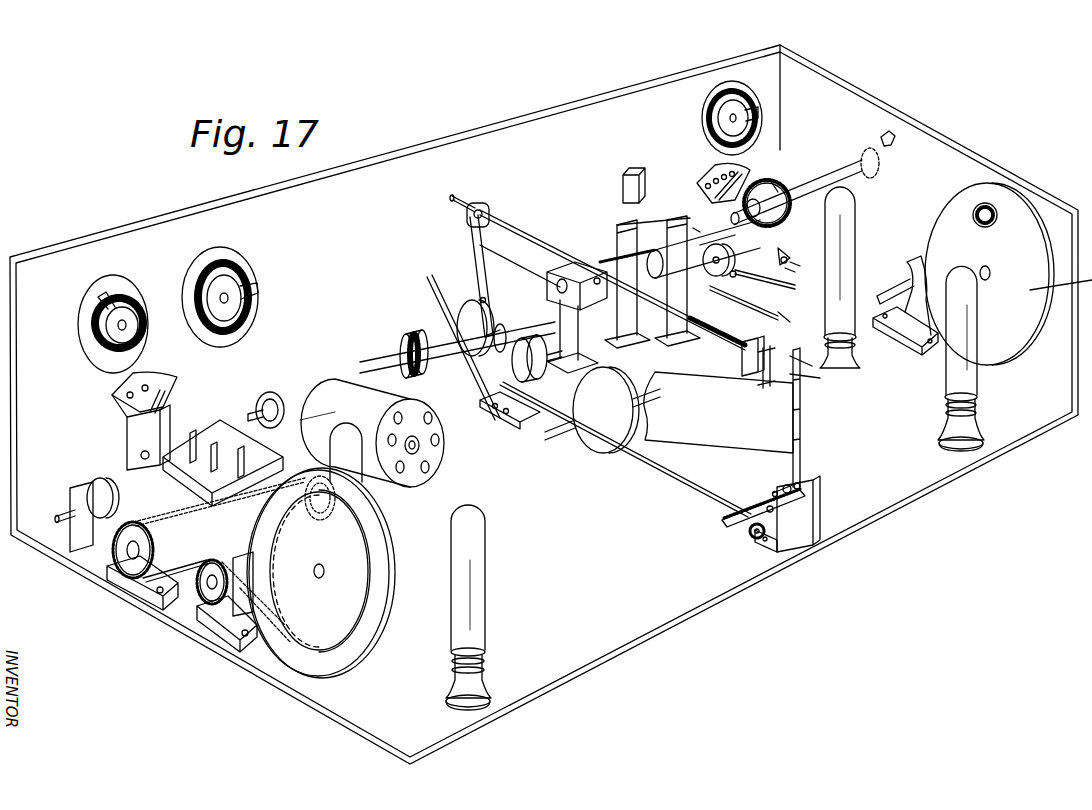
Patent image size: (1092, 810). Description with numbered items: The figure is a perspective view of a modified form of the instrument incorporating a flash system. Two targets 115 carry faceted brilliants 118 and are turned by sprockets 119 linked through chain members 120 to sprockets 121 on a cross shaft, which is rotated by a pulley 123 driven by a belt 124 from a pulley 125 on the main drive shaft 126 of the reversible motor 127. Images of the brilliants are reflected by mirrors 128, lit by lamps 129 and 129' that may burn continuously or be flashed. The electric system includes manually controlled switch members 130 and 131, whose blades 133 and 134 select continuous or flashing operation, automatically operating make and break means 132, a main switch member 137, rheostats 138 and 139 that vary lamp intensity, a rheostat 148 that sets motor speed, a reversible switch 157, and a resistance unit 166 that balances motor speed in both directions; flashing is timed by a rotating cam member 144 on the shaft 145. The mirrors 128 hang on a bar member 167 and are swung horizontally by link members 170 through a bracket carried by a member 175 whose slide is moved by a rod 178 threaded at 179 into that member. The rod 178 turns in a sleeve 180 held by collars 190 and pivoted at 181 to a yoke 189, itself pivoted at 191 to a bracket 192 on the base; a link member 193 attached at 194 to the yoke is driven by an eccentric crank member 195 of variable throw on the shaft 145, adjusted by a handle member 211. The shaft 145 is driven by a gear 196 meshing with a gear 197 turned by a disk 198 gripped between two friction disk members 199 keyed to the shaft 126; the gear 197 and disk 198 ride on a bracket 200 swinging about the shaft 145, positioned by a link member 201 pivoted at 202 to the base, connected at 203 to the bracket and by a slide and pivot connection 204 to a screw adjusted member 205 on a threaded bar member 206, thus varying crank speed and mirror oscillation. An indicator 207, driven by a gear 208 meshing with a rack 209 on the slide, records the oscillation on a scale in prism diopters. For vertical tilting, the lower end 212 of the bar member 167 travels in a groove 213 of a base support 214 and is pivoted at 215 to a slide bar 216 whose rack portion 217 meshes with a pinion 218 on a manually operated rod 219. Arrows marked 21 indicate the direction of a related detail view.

The apparatus 21 is at (889, 408).
The target 115 is at (372, 627).
The brilliant or jewel 118 is at (993, 208).
The sprocket 119 is at (275, 548).
The chain member 120 is at (180, 512).
The sprocket 121 is at (203, 597).
The pulley 123 is at (600, 445).
The belt 124 is at (446, 432).
The pulley 125 is at (458, 318).
The shaft 126 is at (432, 365).
The motor 127 is at (355, 373).
The mirror 128 is at (820, 410).
The electrical lamp or bulb 129 is at (403, 566).
The electrical lamp or bulb 129' is at (919, 307).
The switch member 130 is at (703, 178).
The switch member 131 is at (127, 432).
The make and break means 132 is at (665, 235).
The blade 133 is at (693, 228).
The blade 134 is at (157, 400).
The main switch member 137 is at (625, 176).
The rheostat 138 is at (702, 118).
The rheostat 139 is at (92, 340).
The rotating cam member 144 is at (607, 263).
The shaft 145 is at (805, 183).
The rheostat 148 is at (245, 268).
The reversible switch 157 is at (240, 430).
The resistance unit 166 is at (90, 482).
The bar member 167 is at (803, 467).
The link member 170 is at (760, 372).
The member 175 is at (740, 351).
The rod 178 is at (512, 215).
The threaded portion 179 is at (728, 344).
The sleeve 180 is at (477, 204).
The pivot 181 is at (470, 214).
The yoke 189 is at (477, 238).
The collar 190 is at (468, 210).
The pivot 191 is at (477, 338).
The bracket 192 is at (500, 324).
The link member 193 is at (505, 262).
The attachment point 194 is at (478, 252).
The eccentric crank member 195 is at (545, 338).
The gear 196 is at (775, 180).
The gear 197 is at (782, 250).
The disk 198 is at (727, 287).
The friction disk member 199 is at (700, 240).
The bracket 200 is at (778, 185).
The link member 201 is at (770, 278).
The pivot 202 is at (813, 253).
The pivotal connection 203 is at (733, 277).
The combination slide and pivotal connection 204 is at (785, 268).
The screw adjusted member 205 is at (790, 262).
The threaded bar member 206 is at (786, 257).
The indicator 207 is at (764, 302).
The gear 208 is at (812, 366).
The rack 209 is at (820, 378).
The handle member 211 is at (888, 136).
The lower end 212 is at (805, 481).
The groove 213 is at (787, 486).
The base support 214 is at (803, 527).
The pivot 215 is at (775, 494).
The slide bar 216 is at (768, 507).
The rack portion 217 is at (730, 526).
The pinion 218 is at (757, 538).
The rod 219 is at (672, 474).